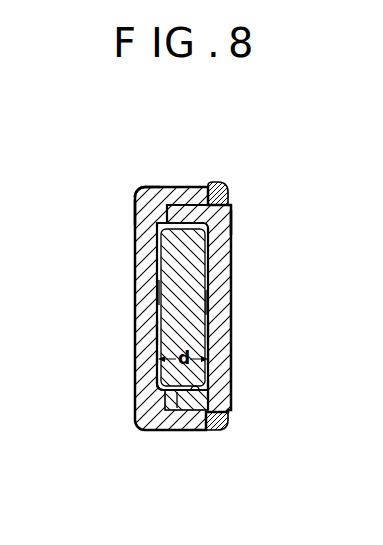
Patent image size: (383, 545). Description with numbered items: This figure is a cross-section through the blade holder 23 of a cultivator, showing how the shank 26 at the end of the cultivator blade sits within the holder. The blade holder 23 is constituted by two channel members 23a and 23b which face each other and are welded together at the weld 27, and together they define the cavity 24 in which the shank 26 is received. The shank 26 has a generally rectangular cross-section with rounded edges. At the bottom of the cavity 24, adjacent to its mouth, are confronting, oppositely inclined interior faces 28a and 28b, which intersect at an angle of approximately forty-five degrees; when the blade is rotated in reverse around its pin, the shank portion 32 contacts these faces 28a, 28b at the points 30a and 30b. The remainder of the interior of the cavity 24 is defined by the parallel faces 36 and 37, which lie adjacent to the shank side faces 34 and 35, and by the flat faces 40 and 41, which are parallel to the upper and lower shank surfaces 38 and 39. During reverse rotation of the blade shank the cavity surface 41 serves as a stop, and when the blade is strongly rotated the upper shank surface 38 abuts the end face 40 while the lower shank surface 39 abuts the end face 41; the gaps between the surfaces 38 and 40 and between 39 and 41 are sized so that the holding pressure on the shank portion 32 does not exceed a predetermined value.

The blade holder 23 is at (160, 189).
The channel member 23a is at (139, 210).
The channel member 23b is at (222, 226).
The cavity 24 is at (149, 236).
The shank 26 is at (196, 268).
The weld 27 is at (223, 195).
The inclined interior face 28a is at (158, 356).
The inclined interior face 28b is at (207, 356).
The contact point 30a is at (158, 396).
The contact point 30b is at (215, 400).
The shank portion 32 is at (163, 425).
The shank side face 34 is at (155, 333).
The shank side face 35 is at (214, 338).
The parallel face 36 is at (150, 293).
The parallel face 37 is at (212, 304).
The upper shank surface 38 is at (190, 206).
The lower shank surface 39 is at (188, 415).
The flat end face 40 is at (157, 194).
The flat end face 41 is at (208, 425).